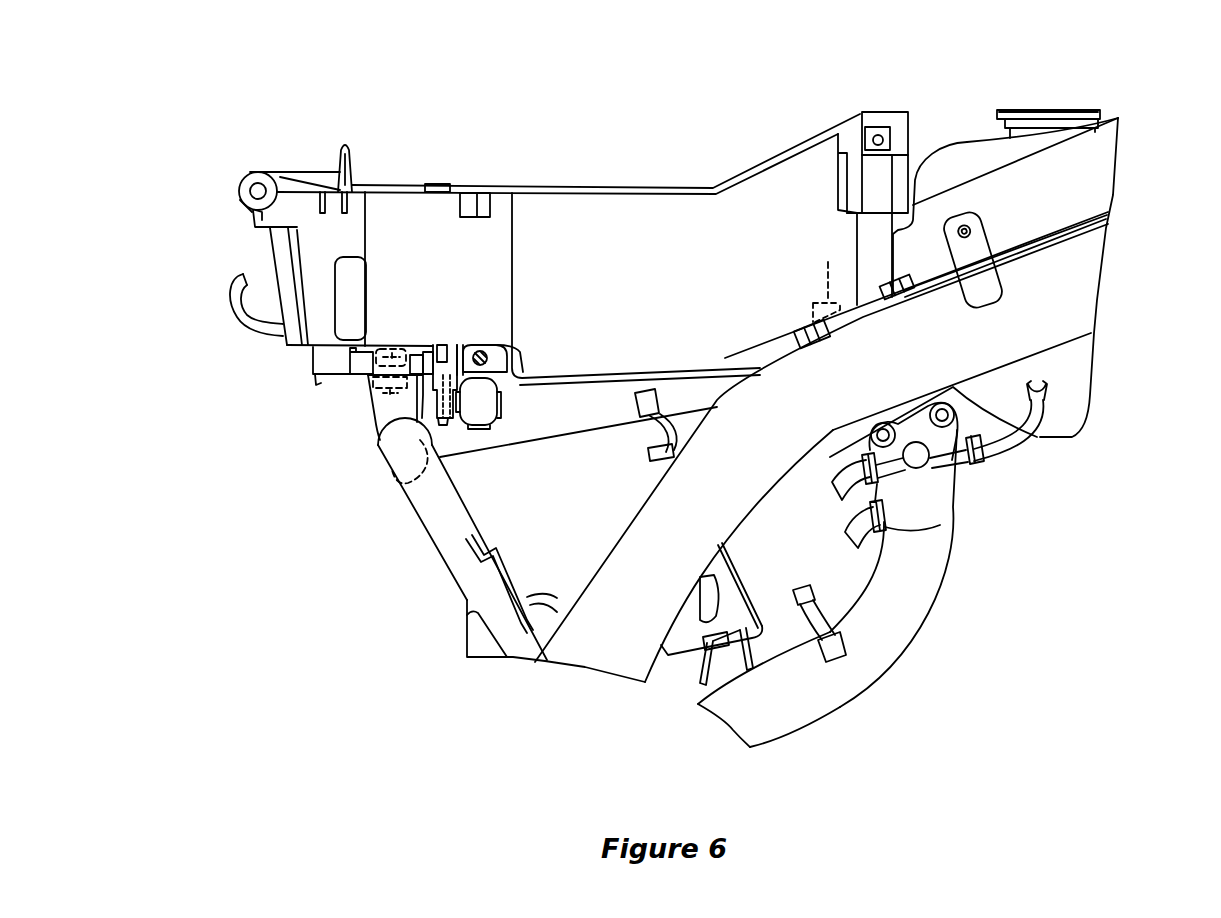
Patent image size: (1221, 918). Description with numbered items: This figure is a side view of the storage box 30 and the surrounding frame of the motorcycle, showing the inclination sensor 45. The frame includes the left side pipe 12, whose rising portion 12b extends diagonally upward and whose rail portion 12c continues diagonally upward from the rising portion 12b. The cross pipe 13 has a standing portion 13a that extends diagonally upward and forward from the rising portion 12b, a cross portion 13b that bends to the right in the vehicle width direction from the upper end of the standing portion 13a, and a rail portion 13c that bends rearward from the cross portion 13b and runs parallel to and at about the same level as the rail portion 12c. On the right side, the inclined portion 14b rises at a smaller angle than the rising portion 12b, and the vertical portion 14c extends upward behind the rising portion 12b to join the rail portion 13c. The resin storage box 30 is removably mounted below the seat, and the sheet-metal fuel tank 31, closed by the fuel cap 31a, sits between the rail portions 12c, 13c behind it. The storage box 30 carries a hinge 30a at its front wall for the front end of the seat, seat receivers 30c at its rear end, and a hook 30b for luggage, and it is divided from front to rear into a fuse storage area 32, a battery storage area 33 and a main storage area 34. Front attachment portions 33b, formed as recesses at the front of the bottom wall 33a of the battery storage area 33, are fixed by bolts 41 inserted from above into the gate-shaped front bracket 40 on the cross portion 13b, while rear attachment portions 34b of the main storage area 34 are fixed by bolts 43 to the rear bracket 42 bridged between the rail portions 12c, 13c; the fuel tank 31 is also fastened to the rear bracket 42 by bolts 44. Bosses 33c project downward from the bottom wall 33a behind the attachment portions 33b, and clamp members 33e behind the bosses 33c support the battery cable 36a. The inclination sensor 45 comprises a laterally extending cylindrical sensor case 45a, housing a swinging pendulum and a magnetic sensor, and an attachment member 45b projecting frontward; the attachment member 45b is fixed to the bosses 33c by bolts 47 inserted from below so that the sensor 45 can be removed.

The left side pipe 12 is at (653, 680).
The rising portion 12b is at (730, 533).
The rail portion 12c is at (1091, 342).
The cross pipe 13 is at (425, 544).
The standing portion 13a is at (465, 600).
The cross portion 13b is at (410, 475).
The rail portion 13c is at (615, 428).
The inclined portion 14b is at (780, 733).
The vertical portion 14c is at (953, 520).
The storage box 30 is at (843, 108).
The hinge 30a is at (253, 172).
The hook 30b is at (233, 297).
The seat receivers 30c is at (888, 112).
The fuel tank 31 is at (972, 130).
The fuel cap 31a is at (1105, 92).
The fuse storage area 32 is at (322, 165).
The battery storage area 33 is at (445, 178).
The bottom wall 33a is at (420, 346).
The front attachment portions 33b is at (382, 345).
The bosses 33c is at (430, 385).
The clamp members 33e is at (510, 353).
The main storage area 34 is at (655, 180).
The rear attachment portions 34b is at (807, 322).
The battery cable 36a is at (485, 350).
The front bracket 40 is at (366, 424).
The bolts 41 is at (397, 346).
The rear bracket 42 is at (812, 347).
The bolts 43 is at (828, 272).
The bolts 44 is at (893, 282).
The inclination sensor 45 is at (505, 423).
The sensor case 45a is at (480, 428).
The attachment member 45b is at (460, 405).
The bolts 47 is at (447, 424).